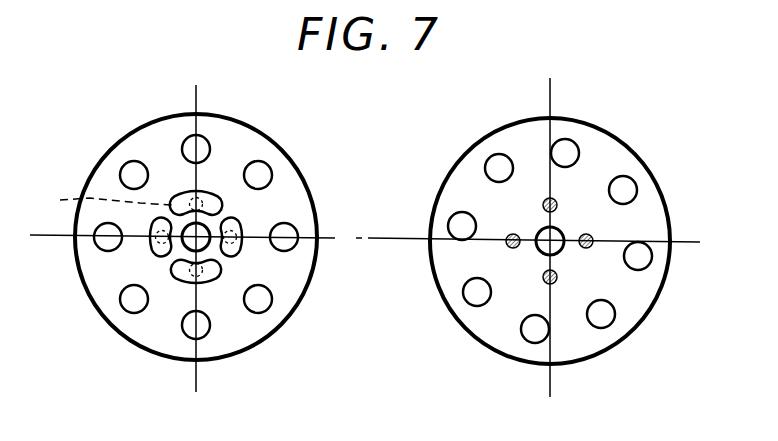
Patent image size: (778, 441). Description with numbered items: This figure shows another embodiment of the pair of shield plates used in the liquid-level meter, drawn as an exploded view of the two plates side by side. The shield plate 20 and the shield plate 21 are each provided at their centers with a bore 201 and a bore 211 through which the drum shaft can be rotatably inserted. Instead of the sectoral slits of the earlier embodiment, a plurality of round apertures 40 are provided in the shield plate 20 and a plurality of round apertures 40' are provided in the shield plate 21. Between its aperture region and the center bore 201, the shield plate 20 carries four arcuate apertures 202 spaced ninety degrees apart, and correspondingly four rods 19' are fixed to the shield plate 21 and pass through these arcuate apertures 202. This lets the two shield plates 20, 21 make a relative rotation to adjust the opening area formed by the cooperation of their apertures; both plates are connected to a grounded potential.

The shield plate 20 is at (175, 352).
The bore 201 is at (154, 308).
The arcuate aperture 202 is at (236, 193).
The round apertures 40 is at (161, 229).
The rod member 19' is at (377, 215).
The shield plate 21 is at (508, 348).
The bore 211 is at (497, 304).
The round apertures 40' is at (570, 222).